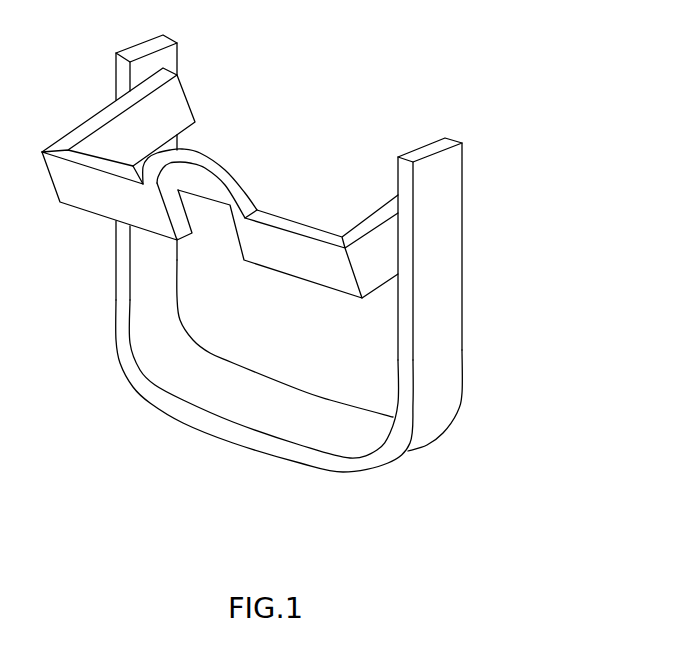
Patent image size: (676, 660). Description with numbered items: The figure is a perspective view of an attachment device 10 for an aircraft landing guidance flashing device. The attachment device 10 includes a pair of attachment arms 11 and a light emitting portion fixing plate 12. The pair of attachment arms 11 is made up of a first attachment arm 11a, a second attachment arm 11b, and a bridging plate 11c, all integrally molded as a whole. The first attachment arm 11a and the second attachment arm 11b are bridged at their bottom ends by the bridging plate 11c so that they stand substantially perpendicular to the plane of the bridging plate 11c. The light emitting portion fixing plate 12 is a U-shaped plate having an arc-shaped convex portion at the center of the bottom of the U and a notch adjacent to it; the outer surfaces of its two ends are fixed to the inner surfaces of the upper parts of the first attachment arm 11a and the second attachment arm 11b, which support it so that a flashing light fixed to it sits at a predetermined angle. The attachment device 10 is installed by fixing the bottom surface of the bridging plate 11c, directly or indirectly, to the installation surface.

The attachment device 10 is at (408, 58).
The pair of attachment arms 11 is at (535, 293).
The first attachment arm 11a is at (440, 333).
The second attachment arm 11b is at (158, 310).
The bridging plate 11c is at (300, 408).
The light emitting portion fixing plate 12 is at (370, 255).